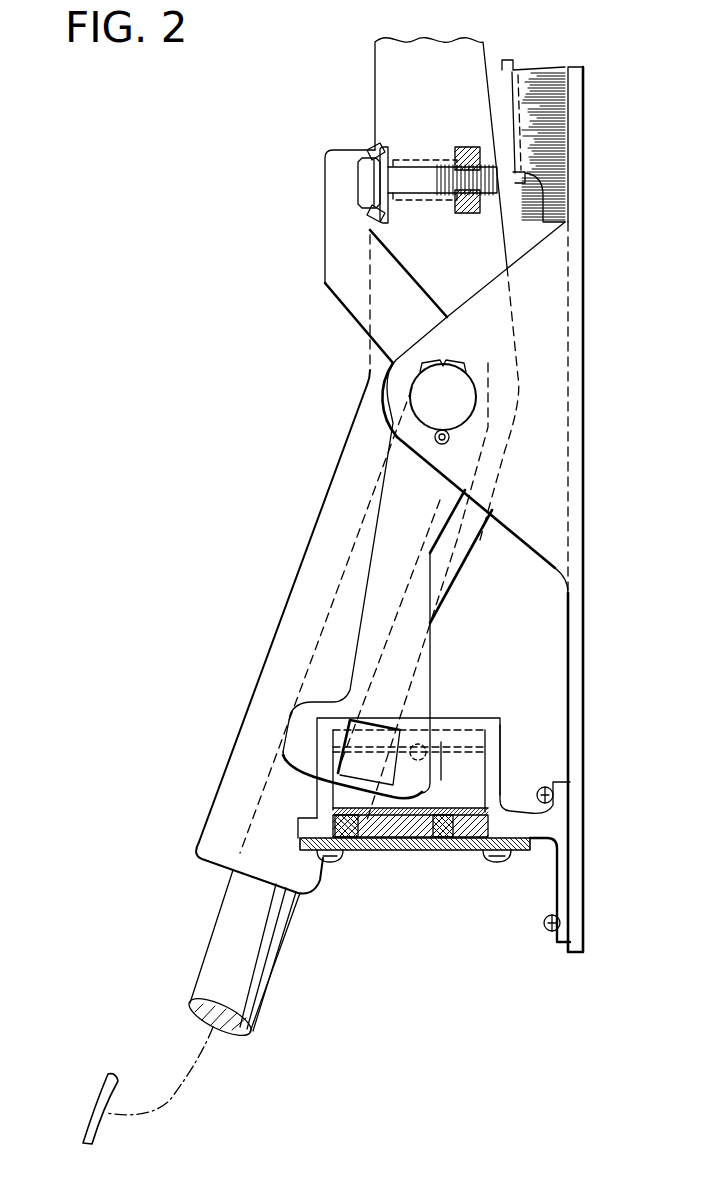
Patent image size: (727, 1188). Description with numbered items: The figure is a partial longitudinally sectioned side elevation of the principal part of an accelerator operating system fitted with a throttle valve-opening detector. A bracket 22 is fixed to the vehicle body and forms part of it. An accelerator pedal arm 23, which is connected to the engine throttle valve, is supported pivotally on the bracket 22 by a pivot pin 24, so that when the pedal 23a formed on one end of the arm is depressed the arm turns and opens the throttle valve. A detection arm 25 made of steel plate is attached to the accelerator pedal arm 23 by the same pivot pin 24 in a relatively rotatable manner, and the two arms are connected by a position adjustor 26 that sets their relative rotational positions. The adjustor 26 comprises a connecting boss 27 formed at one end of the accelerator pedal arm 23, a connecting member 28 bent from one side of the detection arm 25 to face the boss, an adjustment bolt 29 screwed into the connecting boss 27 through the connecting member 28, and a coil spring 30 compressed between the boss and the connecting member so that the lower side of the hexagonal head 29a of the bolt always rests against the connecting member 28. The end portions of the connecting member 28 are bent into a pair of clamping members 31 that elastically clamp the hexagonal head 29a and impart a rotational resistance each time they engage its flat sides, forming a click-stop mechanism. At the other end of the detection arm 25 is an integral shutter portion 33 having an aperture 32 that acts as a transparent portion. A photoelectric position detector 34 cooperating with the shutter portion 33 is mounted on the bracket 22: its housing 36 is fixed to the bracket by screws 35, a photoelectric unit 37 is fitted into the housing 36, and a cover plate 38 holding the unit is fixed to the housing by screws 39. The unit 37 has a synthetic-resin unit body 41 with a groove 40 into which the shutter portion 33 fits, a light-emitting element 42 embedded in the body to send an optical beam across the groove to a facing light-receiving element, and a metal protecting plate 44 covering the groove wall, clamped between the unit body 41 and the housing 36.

The bracket 22 is at (579, 333).
The accelerator pedal arm 23 is at (215, 787).
The pedal 23a is at (100, 1085).
The pivot pin 24 is at (435, 380).
The detection arm 25 is at (390, 524).
The position adjustor 26 is at (346, 138).
The connecting boss 27 is at (465, 148).
The connecting member 28 is at (386, 152).
The adjustment bolt 29 is at (413, 186).
The hexagonal head 29a is at (360, 178).
The coil spring 30 is at (442, 205).
The clamping members 31 is at (372, 147).
The aperture 32 is at (340, 757).
The shutter portion 33 is at (302, 705).
The photoelectric position detector 34 is at (484, 700).
The screws 35 is at (545, 787).
The housing 36 is at (501, 741).
The photoelectric unit 37 is at (441, 760).
The cover plate 38 is at (405, 838).
The screws 39 is at (330, 863).
The groove 40 is at (365, 837).
The unit body 41 is at (450, 838).
The light-emitting element 42 is at (417, 742).
The metal protecting plate 44 is at (457, 810).